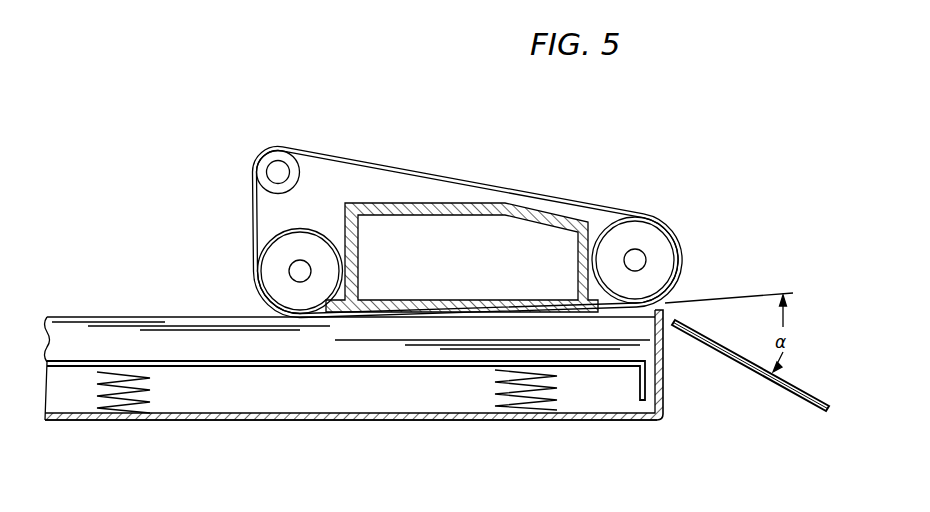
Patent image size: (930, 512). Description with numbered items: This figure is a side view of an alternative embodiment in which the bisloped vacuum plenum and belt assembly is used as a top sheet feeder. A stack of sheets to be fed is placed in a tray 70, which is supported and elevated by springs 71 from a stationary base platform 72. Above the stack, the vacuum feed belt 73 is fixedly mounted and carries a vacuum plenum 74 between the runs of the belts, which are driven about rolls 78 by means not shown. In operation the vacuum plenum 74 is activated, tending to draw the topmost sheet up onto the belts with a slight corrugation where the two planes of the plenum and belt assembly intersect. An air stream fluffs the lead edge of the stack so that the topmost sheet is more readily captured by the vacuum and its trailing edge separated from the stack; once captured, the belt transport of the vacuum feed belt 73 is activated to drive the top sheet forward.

The tray 70 is at (113, 362).
The springs 71 is at (150, 387).
The stationary base platform 72 is at (432, 423).
The vacuum feed belt 73 is at (382, 165).
The vacuum plenum 74 is at (508, 205).
The rolls 78 is at (277, 275).